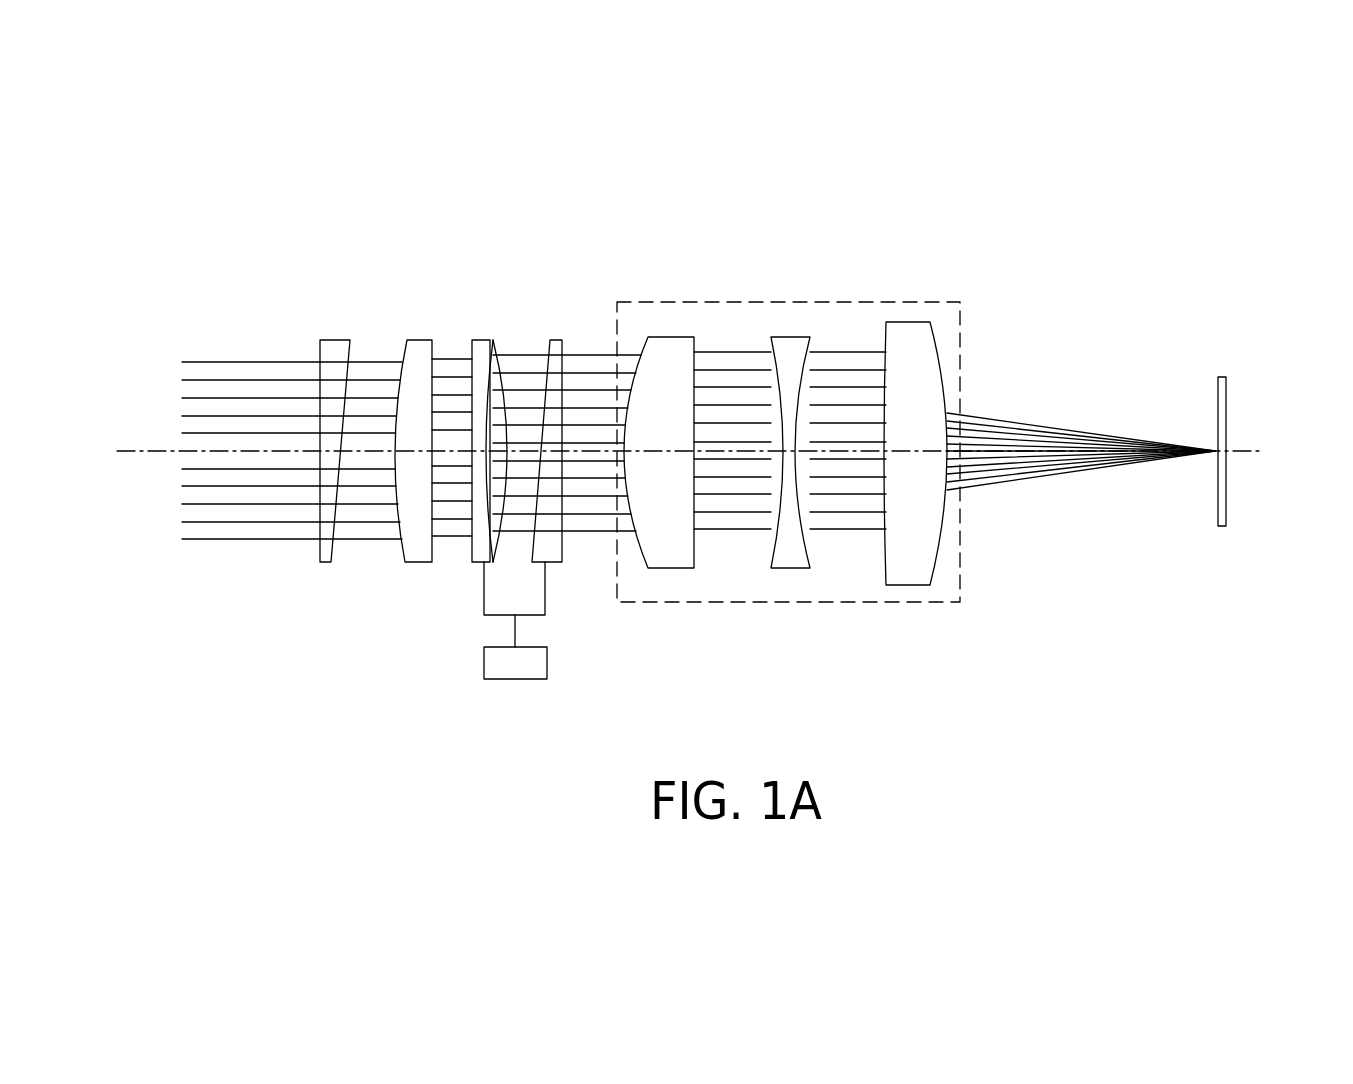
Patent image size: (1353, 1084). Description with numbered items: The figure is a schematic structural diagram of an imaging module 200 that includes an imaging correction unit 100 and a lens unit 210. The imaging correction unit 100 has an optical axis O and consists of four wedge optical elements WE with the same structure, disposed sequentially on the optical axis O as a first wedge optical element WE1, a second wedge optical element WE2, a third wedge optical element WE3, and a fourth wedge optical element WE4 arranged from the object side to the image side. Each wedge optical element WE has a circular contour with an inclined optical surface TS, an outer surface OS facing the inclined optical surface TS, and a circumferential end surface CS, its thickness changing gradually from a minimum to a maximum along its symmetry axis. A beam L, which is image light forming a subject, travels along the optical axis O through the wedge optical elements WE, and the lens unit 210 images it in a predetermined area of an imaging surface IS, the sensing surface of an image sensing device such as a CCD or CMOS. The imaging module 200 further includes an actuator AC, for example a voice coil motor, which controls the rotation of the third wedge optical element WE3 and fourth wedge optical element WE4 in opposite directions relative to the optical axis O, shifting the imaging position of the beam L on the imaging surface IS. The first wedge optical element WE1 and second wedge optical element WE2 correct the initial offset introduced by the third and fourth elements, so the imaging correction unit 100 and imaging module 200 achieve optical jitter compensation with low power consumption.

The imaging correction unit 100 is at (413, 459).
The imaging module 200 is at (702, 459).
The lens unit 210 is at (910, 300).
The beam L is at (245, 378).
The wedge optical element WE is at (439, 386).
The first wedge optical element WE1 is at (328, 340).
The second wedge optical element WE2 is at (413, 340).
The third wedge optical element WE3 is at (490, 340).
The fourth wedge optical element WE4 is at (557, 340).
The outer surface OS is at (316, 511).
The inclined optical surface TS is at (499, 383).
The circumferential end surface CS is at (480, 338).
The actuator AC is at (521, 670).
The imaging surface IS is at (1218, 397).
The optical axis O is at (1249, 453).